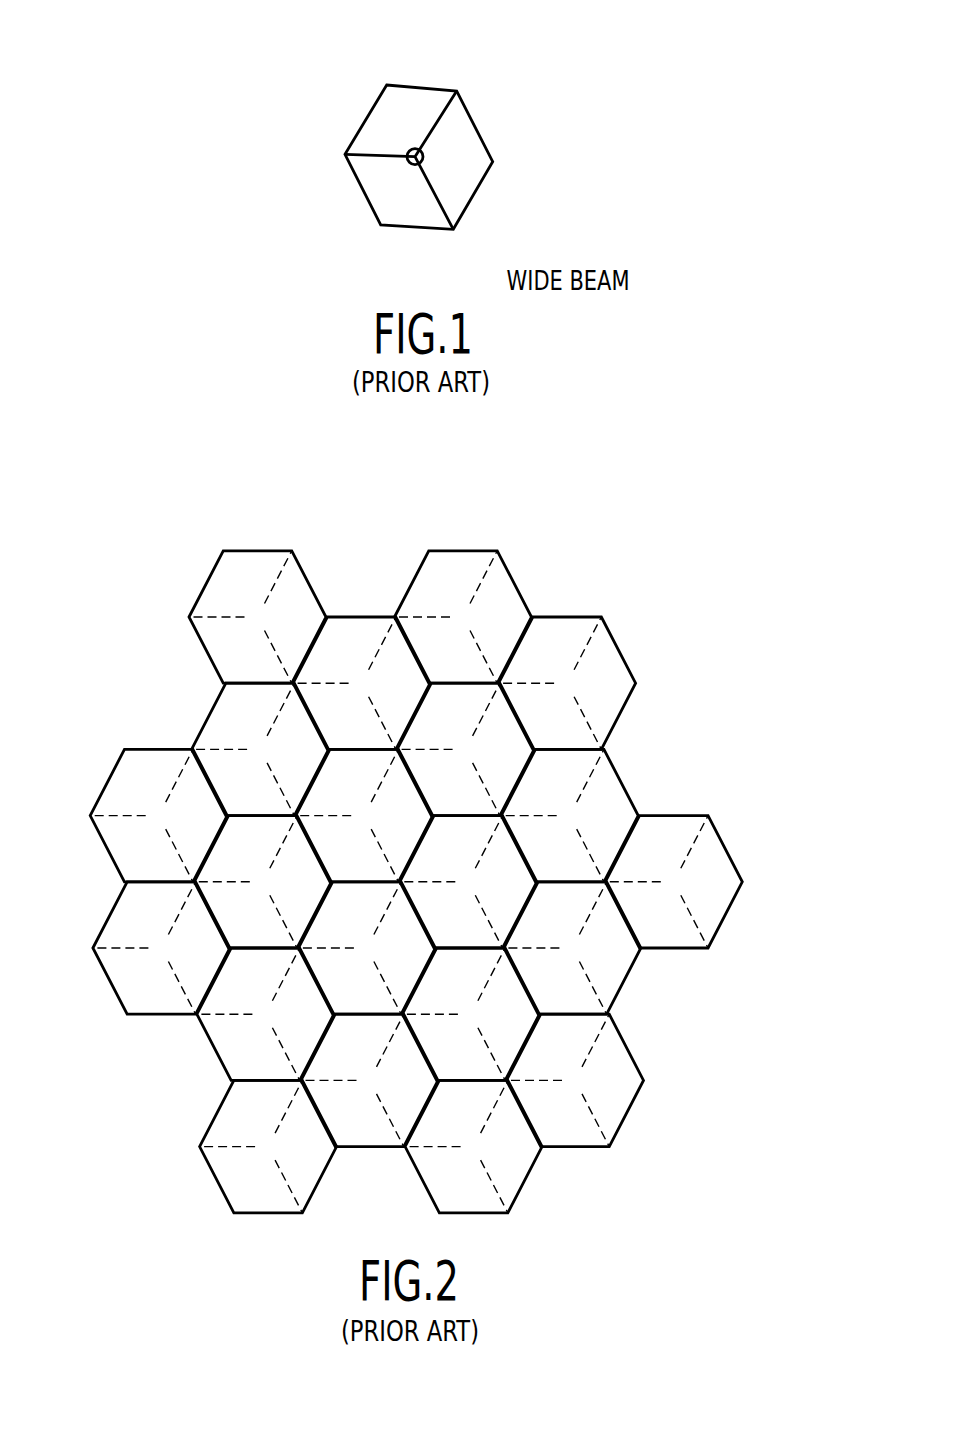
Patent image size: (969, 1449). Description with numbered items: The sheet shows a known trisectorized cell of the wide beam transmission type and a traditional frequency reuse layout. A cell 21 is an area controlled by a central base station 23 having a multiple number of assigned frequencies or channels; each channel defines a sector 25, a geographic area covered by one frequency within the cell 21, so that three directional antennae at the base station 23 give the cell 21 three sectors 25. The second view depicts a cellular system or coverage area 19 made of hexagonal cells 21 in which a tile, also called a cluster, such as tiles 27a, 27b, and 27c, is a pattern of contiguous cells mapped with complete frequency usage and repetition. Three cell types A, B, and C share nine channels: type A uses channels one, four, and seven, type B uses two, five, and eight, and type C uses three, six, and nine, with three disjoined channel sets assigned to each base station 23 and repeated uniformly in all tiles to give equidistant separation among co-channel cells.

In FIG. 2, the coverage area 19 is at (708, 512).
In FIG. 1, the cell 21 is at (325, 83).
In FIG. 2, the cell 21 is at (460, 705).
In FIG. 1, the central base station 23 is at (425, 154).
In FIG. 2, the central base station 23 is at (582, 682).
In FIG. 1, the sector 25 is at (416, 107).
In FIG. 2, the tile 27a is at (625, 662).
In FIG. 2, the tile 27b is at (675, 810).
In FIG. 2, the tile 27c is at (628, 1050).